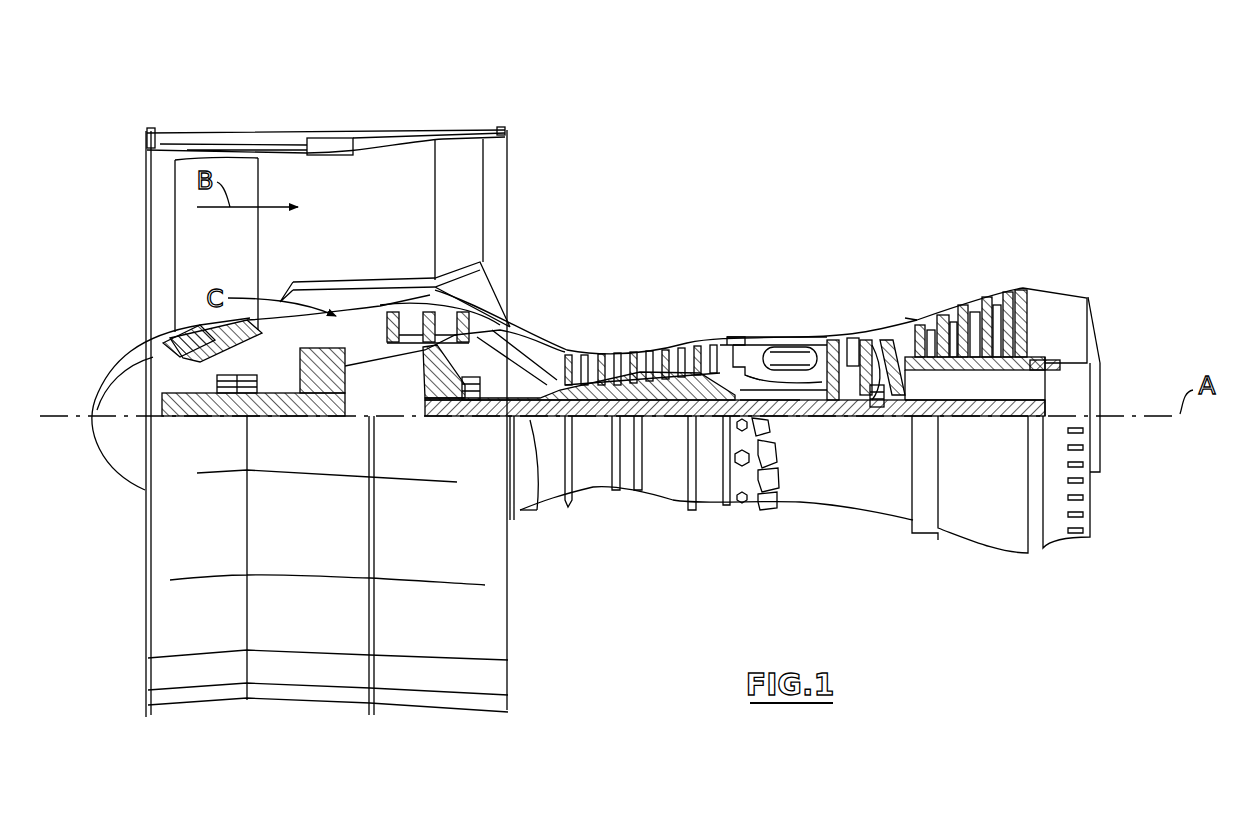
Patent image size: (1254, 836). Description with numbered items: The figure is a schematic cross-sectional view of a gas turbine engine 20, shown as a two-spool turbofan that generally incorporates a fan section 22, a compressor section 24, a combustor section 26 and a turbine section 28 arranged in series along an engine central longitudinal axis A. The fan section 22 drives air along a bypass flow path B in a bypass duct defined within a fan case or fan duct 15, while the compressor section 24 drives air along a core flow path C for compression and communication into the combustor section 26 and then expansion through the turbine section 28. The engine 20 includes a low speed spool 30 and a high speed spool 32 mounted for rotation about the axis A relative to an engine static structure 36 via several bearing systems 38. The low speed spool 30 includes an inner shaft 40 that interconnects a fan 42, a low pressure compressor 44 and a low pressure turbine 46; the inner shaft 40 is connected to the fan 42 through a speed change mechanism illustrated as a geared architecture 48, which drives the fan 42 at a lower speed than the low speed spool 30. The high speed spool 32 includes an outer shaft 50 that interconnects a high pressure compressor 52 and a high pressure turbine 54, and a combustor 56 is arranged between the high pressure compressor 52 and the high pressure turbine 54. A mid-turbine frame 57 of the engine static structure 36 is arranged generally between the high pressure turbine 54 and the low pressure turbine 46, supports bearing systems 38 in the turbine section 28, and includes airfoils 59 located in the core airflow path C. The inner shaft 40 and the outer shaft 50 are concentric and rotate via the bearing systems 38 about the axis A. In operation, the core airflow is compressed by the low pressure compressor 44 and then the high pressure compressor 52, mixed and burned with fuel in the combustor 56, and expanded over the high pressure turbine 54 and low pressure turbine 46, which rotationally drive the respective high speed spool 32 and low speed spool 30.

The fan case 15 is at (330, 140).
The gas turbine engine 20 is at (787, 186).
The fan section 22 is at (257, 122).
The compressor section 24 is at (558, 324).
The combustor section 26 is at (783, 313).
The turbine section 28 is at (931, 274).
The low speed spool 30 is at (667, 420).
The high speed spool 32 is at (710, 373).
The engine static structure 36 is at (708, 505).
The bearing systems 38 is at (200, 366).
The inner shaft 40 is at (530, 418).
The fan 42 is at (232, 262).
The low pressure compressor 44 is at (433, 327).
The low pressure turbine 46 is at (977, 307).
The geared architecture 48 is at (338, 398).
The outer shaft 50 is at (793, 413).
The high pressure compressor 52 is at (640, 387).
The high pressure turbine 54 is at (847, 340).
The combustor 56 is at (783, 357).
The mid-turbine frame 57 is at (893, 323).
The airfoils 59 is at (883, 350).